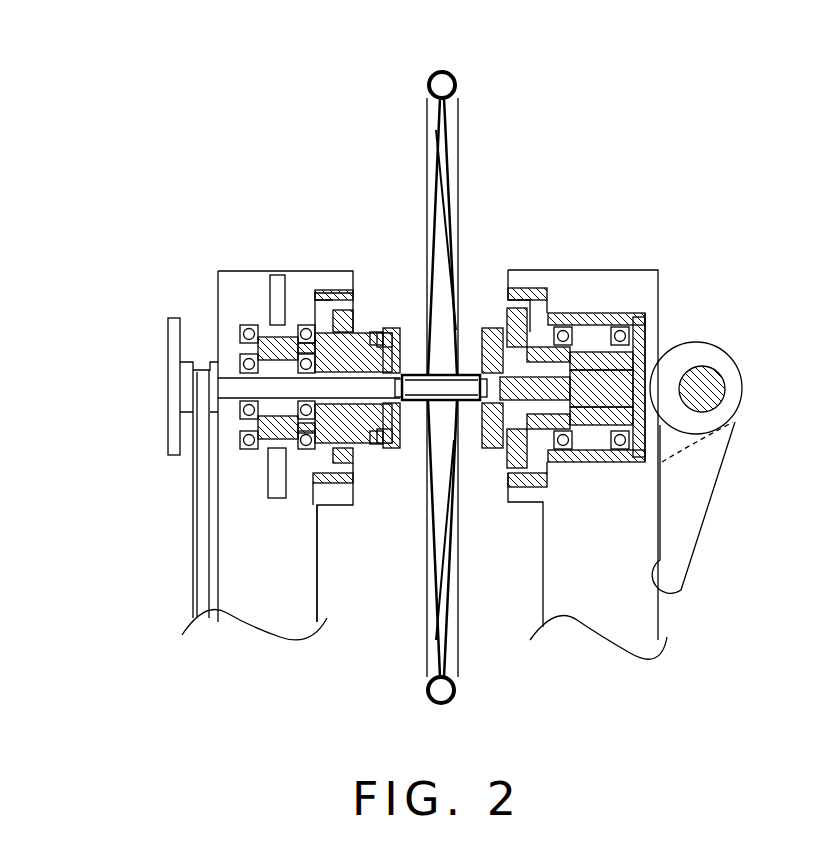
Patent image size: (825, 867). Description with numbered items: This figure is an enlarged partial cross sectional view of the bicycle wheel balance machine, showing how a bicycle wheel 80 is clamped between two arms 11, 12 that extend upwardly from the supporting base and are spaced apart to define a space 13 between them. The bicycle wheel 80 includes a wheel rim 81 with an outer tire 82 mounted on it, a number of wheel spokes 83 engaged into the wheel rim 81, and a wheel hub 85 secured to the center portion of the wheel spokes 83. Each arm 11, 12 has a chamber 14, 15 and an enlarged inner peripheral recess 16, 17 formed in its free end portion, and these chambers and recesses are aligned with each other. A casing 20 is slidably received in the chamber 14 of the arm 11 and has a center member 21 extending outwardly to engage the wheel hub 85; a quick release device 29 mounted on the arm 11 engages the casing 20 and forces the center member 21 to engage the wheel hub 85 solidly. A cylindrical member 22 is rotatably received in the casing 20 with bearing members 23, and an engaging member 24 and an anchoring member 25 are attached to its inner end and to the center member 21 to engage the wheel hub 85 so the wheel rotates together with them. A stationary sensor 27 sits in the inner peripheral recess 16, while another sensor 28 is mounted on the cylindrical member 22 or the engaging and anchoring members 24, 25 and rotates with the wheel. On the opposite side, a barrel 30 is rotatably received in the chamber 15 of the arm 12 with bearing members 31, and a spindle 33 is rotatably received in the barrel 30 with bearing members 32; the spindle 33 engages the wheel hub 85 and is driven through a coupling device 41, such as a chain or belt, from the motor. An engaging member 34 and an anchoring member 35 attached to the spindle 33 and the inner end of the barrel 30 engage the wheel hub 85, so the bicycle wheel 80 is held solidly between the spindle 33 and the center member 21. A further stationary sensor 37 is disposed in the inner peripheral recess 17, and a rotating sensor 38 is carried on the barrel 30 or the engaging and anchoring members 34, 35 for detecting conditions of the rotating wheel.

The arm 11 is at (638, 627).
The arm 12 is at (247, 602).
The space 13 is at (318, 577).
The chamber 14 is at (658, 318).
The chamber 15 is at (268, 330).
The inner peripheral recess 16 is at (548, 330).
The inner peripheral recess 17 is at (330, 292).
The casing 20 is at (647, 427).
The center member 21 is at (556, 332).
The cylindrical member 22 is at (600, 313).
The bearing members 23 is at (622, 448).
The engaging member 24 is at (490, 450).
The anchoring member 25 is at (497, 455).
The sensor 27 is at (504, 310).
The sensor 28 is at (492, 335).
The quick release device 29 is at (738, 381).
The barrel 30 is at (270, 340).
The bearing members 31 is at (242, 447).
The bearing members 32 is at (245, 412).
The spindle 33 is at (280, 386).
The engaging member 34 is at (396, 450).
The anchoring member 35 is at (396, 330).
The sensor 37 is at (345, 315).
The sensor 38 is at (378, 335).
The coupling device 41 is at (198, 597).
The bicycle wheel 80 is at (445, 80).
The wheel rim 81 is at (452, 675).
The outer tire 82 is at (442, 698).
The wheel spokes 83 is at (443, 622).
The wheel hub 85 is at (427, 470).